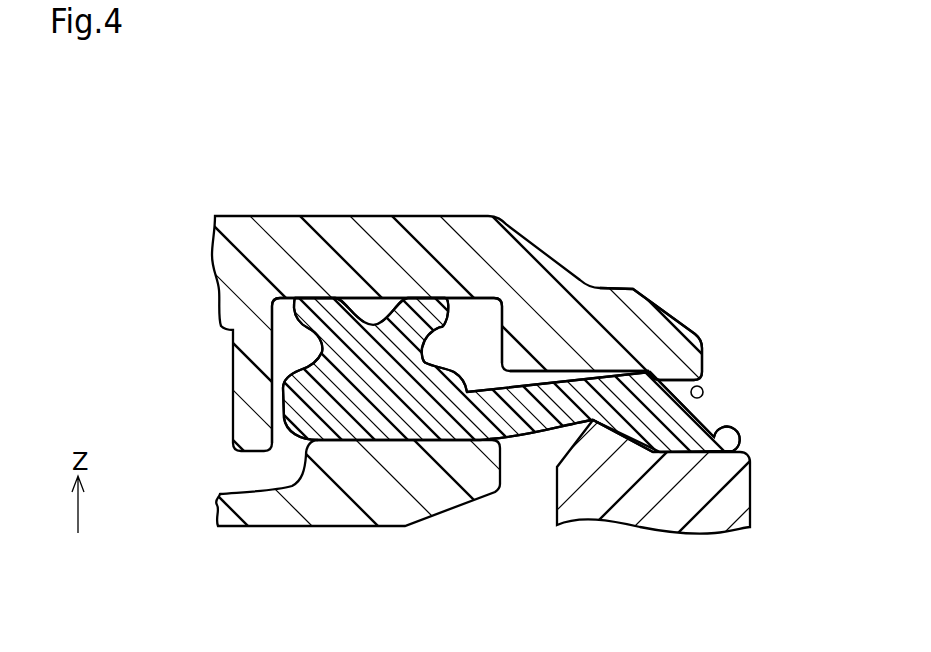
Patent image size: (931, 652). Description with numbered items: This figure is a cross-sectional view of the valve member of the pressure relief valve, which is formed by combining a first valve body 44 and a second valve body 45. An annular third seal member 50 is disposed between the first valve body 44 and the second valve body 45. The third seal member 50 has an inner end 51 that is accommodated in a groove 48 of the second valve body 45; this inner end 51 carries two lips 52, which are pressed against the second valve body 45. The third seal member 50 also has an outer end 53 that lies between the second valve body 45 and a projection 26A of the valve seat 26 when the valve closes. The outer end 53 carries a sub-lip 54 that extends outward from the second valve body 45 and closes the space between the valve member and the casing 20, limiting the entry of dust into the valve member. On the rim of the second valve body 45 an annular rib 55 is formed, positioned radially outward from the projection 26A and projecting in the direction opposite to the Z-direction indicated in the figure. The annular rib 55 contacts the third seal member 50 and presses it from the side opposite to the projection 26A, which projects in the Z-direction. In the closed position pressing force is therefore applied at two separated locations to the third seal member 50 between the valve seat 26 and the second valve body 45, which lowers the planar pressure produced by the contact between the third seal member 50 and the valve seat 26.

The second valve body 45 is at (400, 215).
The groove 48 is at (502, 303).
The outer end 53 is at (620, 369).
The annular rib 55 is at (704, 398).
The lips 52 is at (291, 312).
The third seal member 50 is at (440, 348).
The inner end 51 is at (278, 388).
The valve seat 26 is at (712, 426).
The projection 26A is at (567, 408).
The sub-lip 54 is at (745, 436).
The first valve body 44 is at (472, 503).
The casing 20 is at (750, 484).